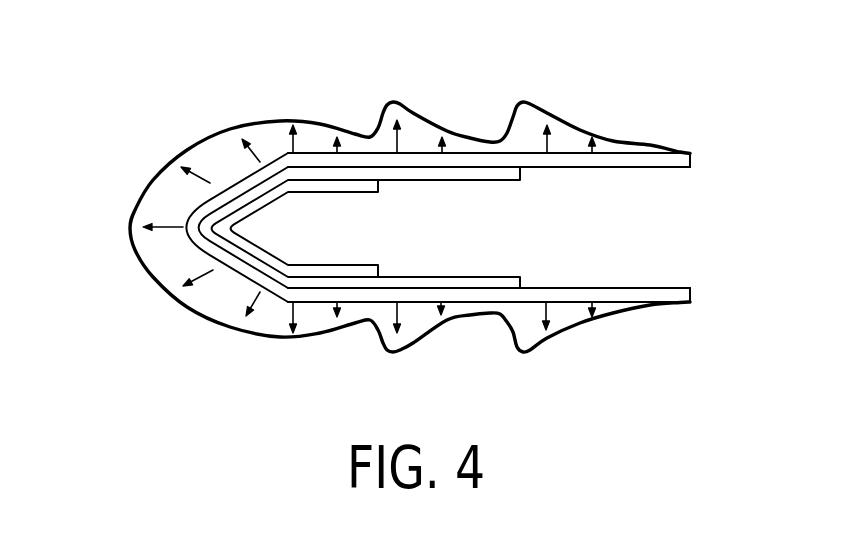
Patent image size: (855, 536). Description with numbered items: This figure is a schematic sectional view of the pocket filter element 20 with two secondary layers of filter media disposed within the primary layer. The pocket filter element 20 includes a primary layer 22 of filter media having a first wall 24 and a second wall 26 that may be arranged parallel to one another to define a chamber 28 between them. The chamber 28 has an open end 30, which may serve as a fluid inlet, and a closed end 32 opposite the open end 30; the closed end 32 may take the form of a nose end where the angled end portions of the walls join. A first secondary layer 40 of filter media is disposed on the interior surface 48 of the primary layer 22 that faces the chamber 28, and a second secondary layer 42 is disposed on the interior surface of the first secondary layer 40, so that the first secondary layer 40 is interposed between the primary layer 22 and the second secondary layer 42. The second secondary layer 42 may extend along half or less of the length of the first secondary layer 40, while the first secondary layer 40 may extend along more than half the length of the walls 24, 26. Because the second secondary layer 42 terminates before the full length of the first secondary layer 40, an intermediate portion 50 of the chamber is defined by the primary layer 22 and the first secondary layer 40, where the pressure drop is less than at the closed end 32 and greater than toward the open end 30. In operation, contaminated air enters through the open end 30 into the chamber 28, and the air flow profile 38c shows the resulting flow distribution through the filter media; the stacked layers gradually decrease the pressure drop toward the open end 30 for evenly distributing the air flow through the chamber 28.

The pocket filter element 20 is at (129, 133).
The air flow profile 38c is at (226, 150).
The intermediate portion 50 is at (391, 162).
The second wall 26 is at (574, 163).
The open end 30 is at (690, 163).
The chamber 28 is at (672, 223).
The closed end 32 is at (192, 233).
The second secondary layer 42 is at (266, 281).
The first secondary layer 40 is at (455, 281).
The interior surface 48 is at (565, 292).
The first wall 24 is at (427, 296).
The primary layer 22 is at (610, 295).